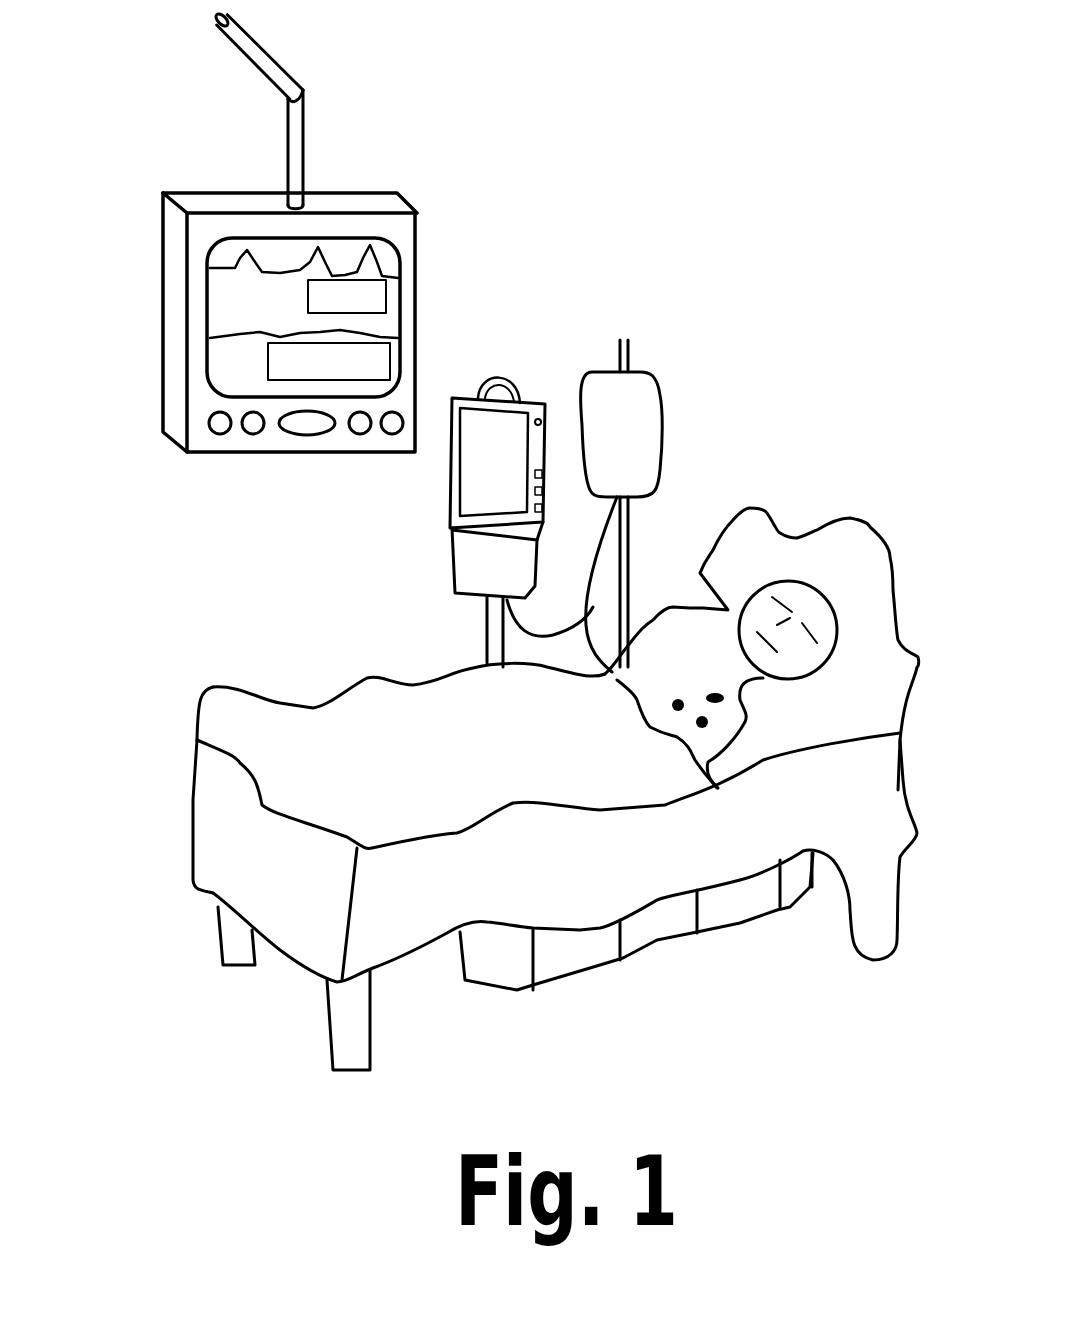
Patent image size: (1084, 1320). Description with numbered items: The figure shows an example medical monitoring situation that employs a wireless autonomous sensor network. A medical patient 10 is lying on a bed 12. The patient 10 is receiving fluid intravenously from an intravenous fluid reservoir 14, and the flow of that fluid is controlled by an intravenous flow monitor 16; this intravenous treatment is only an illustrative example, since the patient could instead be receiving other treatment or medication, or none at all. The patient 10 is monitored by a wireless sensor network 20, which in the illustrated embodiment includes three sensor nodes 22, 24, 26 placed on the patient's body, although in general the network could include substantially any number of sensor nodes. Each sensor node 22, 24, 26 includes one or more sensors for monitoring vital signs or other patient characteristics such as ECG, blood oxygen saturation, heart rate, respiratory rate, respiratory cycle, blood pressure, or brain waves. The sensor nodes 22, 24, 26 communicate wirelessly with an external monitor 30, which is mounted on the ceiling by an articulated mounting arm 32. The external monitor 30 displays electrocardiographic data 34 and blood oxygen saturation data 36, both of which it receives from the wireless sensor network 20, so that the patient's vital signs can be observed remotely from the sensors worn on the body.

The medical patient 10 is at (652, 677).
The bed 12 is at (320, 913).
The intravenous fluid reservoir 14 is at (648, 412).
The intravenous flow monitor 16 is at (455, 505).
The wireless sensor network 20 is at (693, 692).
The sensor node 22 is at (672, 710).
The sensor node 24 is at (725, 700).
The sensor node 26 is at (697, 730).
The external monitor 30 is at (295, 232).
The articulated mounting arm 32 is at (265, 62).
The electrocardiographic data 34 is at (283, 293).
The blood oxygen saturation data 36 is at (243, 368).